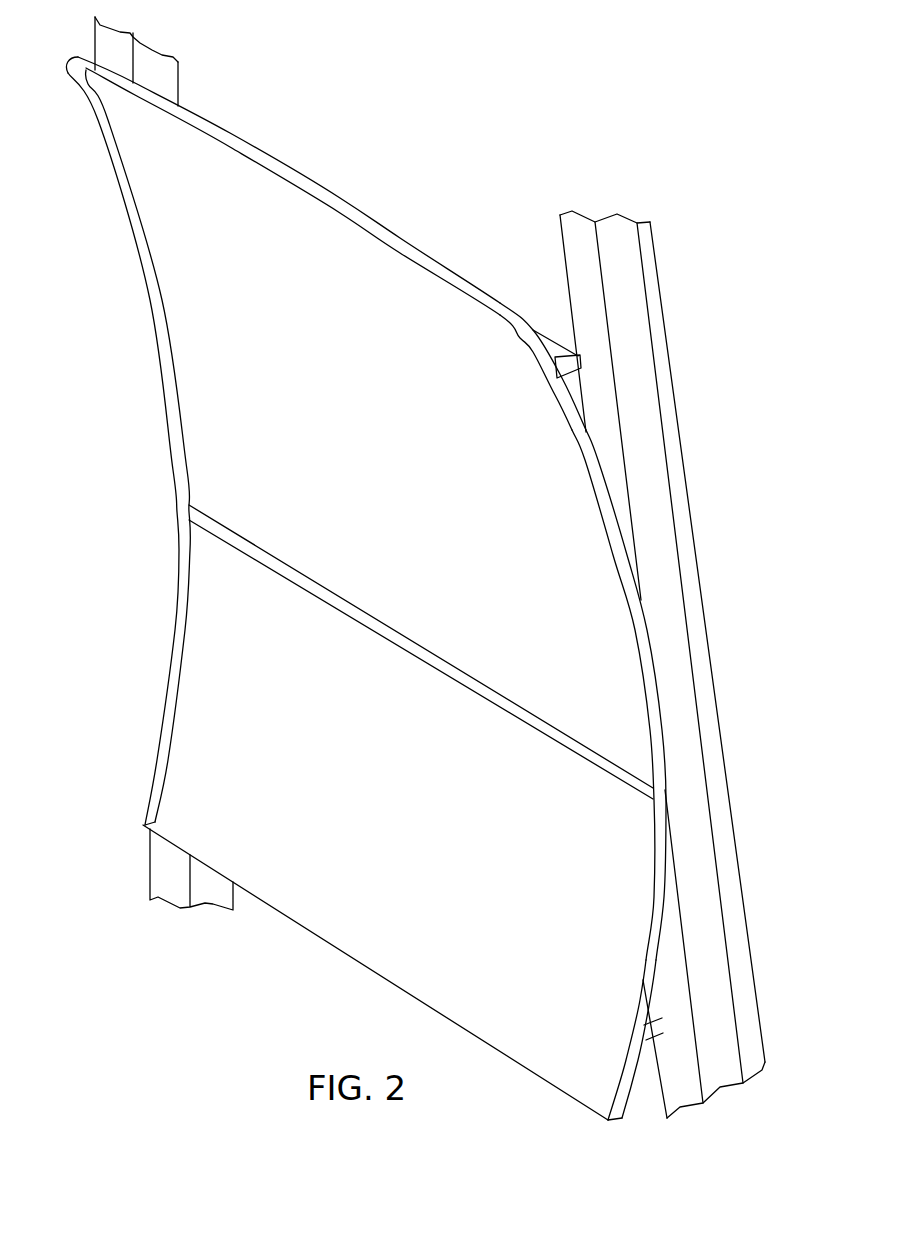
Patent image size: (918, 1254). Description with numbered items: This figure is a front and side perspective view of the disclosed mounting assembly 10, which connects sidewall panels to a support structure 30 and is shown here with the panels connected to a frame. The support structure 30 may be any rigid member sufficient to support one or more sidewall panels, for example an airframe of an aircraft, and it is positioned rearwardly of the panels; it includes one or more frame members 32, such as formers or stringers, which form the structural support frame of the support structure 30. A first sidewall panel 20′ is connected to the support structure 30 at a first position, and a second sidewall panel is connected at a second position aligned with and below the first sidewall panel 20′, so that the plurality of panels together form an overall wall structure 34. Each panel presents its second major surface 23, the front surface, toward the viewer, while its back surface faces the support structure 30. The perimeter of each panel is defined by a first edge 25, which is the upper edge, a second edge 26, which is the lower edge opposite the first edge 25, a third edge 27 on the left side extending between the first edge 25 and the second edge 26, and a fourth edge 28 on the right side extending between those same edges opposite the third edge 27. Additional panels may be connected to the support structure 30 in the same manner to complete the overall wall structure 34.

The mounting assembly 10 is at (462, 118).
The first sidewall panel 20′ is at (243, 130).
The second major surface 23 is at (487, 360).
The first edge 25 is at (345, 200).
The second edge 26 is at (348, 601).
The third edge 27 is at (155, 350).
The fourth edge 28 is at (630, 555).
The support structure 30 is at (703, 346).
The frame members 32 is at (150, 872).
The overall wall structure 34 is at (118, 686).